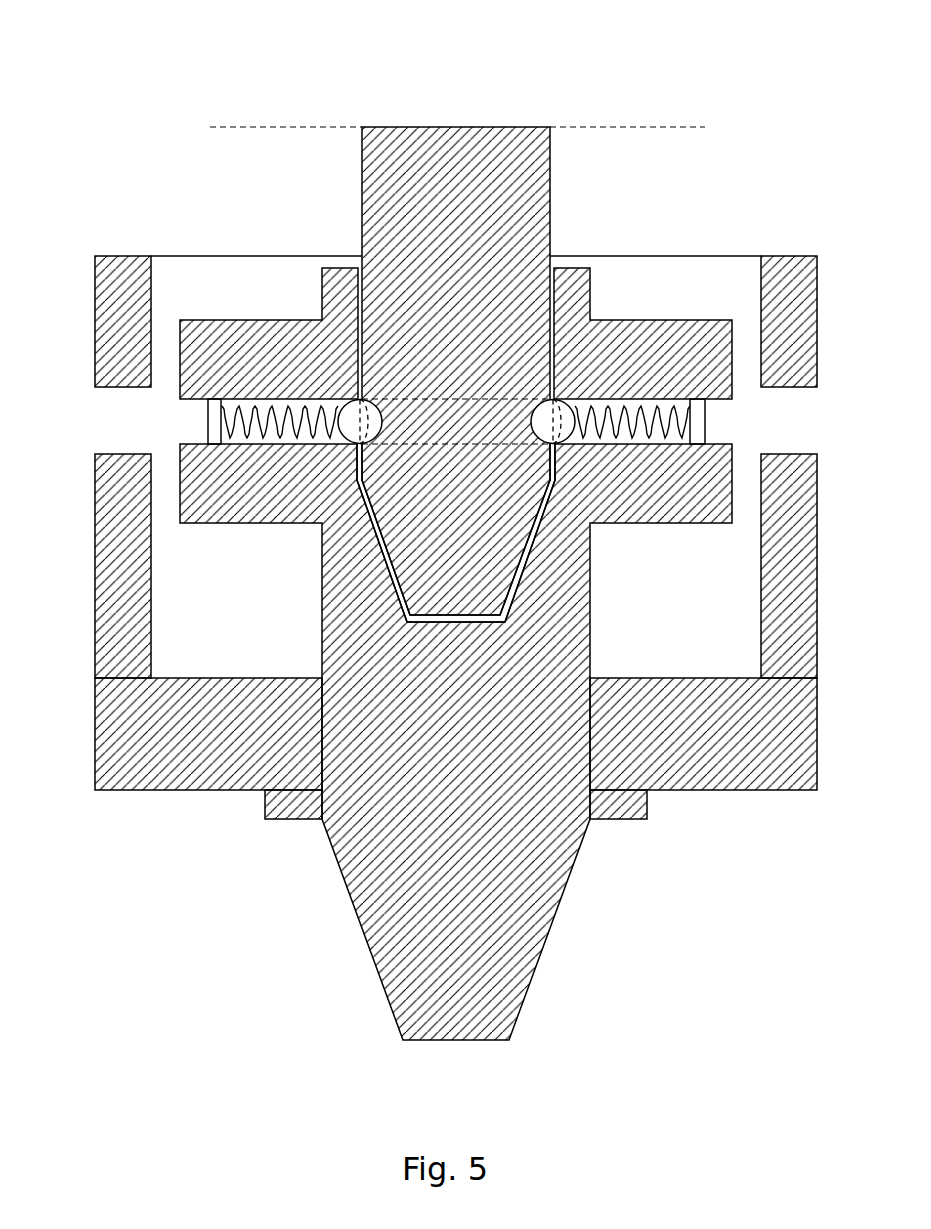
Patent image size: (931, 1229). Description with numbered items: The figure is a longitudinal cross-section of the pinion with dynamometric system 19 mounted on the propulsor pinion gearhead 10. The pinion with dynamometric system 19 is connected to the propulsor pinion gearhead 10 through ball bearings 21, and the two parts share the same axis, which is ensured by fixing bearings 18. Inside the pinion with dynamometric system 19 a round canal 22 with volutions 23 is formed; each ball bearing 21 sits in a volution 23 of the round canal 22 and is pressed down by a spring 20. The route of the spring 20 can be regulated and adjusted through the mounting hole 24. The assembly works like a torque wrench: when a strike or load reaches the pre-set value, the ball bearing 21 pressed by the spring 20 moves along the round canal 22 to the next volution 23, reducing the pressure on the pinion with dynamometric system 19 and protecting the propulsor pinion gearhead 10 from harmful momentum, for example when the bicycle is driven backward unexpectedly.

The propulsor pinion gearhead 10 is at (460, 888).
The fixing bearings 18 is at (225, 763).
The pinion with dynamometric system 19 is at (460, 552).
The spring 20 is at (645, 412).
The ball bearings 21 is at (538, 405).
The round canal 22 is at (383, 422).
The volutions 23 is at (293, 443).
The mounting hole 24 is at (793, 413).